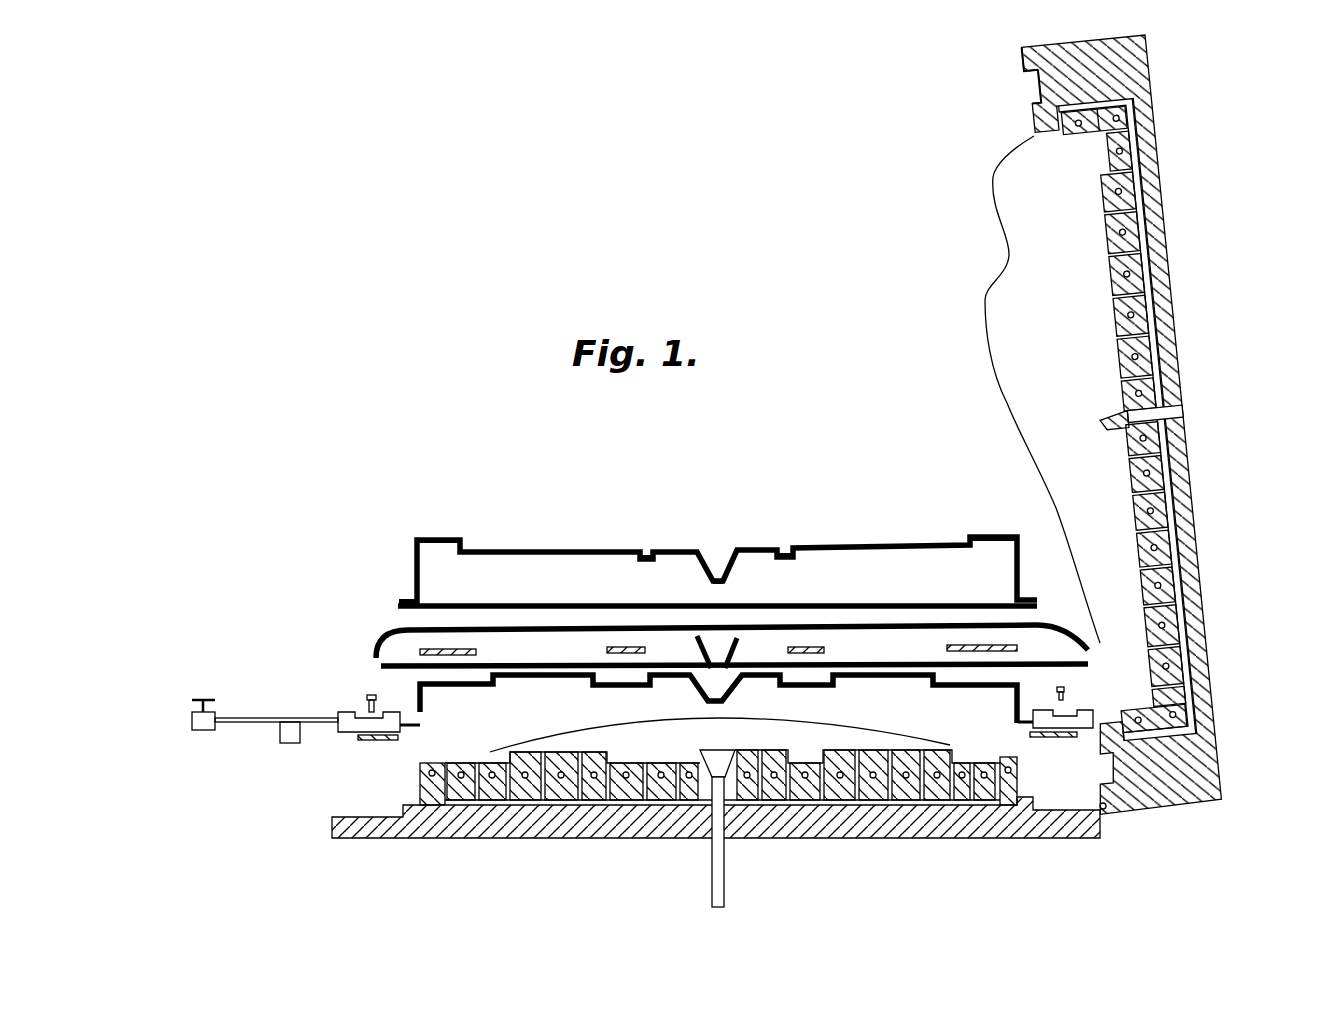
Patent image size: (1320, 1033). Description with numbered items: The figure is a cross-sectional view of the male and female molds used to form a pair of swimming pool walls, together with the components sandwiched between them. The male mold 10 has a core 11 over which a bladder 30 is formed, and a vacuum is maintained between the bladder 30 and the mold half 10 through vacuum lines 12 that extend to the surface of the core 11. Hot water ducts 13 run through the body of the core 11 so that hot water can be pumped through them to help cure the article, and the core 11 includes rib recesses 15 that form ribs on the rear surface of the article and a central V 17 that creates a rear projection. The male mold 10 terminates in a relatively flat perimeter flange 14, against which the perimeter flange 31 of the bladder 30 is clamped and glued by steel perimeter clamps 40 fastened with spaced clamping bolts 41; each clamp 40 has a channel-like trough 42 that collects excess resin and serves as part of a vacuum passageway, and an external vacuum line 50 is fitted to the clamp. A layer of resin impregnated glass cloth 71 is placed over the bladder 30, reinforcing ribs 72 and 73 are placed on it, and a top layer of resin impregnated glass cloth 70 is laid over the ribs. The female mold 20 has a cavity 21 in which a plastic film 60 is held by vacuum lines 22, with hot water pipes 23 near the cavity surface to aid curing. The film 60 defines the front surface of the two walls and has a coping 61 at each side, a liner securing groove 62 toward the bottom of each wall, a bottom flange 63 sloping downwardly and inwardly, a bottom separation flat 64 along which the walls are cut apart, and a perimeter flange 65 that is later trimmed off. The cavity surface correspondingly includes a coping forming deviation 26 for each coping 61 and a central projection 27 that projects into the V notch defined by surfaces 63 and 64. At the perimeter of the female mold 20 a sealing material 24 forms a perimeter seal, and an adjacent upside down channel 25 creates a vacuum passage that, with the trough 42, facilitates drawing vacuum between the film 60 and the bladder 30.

The male mold 10 is at (478, 844).
The core 11 is at (718, 802).
The vacuum lines 12 is at (690, 776).
The hot water ducts 13 is at (522, 776).
The perimeter flange 14 is at (1096, 814).
The rib recesses 15 is at (445, 761).
The V 17 is at (729, 762).
The female mold 20 is at (1116, 422).
The female mold cavity 21 is at (985, 300).
The vacuum lines 22 is at (1110, 262).
The hot water pipes 23 is at (1118, 112).
The sealing material 24 is at (1020, 55).
The upside down channel 25 is at (1030, 80).
The coping forming deviation 26 is at (1088, 140).
The central projection 27 is at (1100, 414).
The bladder 30 is at (568, 686).
The perimeter flange 31 is at (370, 738).
The perimeter clamps 40 is at (705, 718).
The clamping bolts 41 is at (365, 700).
The channel-like trough 42 is at (376, 717).
The external vacuum line 50 is at (246, 726).
The plastic film 60 is at (705, 550).
The coping 61 is at (438, 540).
The liner securing groove 62 is at (645, 550).
The bottom flange 63 is at (735, 565).
The bottom separation flat 64 is at (720, 583).
The perimeter flange 65 is at (400, 600).
The resin impregnated glass cloth 70 is at (706, 623).
The resin impregnated glass cloth 71 is at (379, 667).
The reinforcing rib 72 is at (480, 650).
The reinforcing rib 73 is at (712, 648).